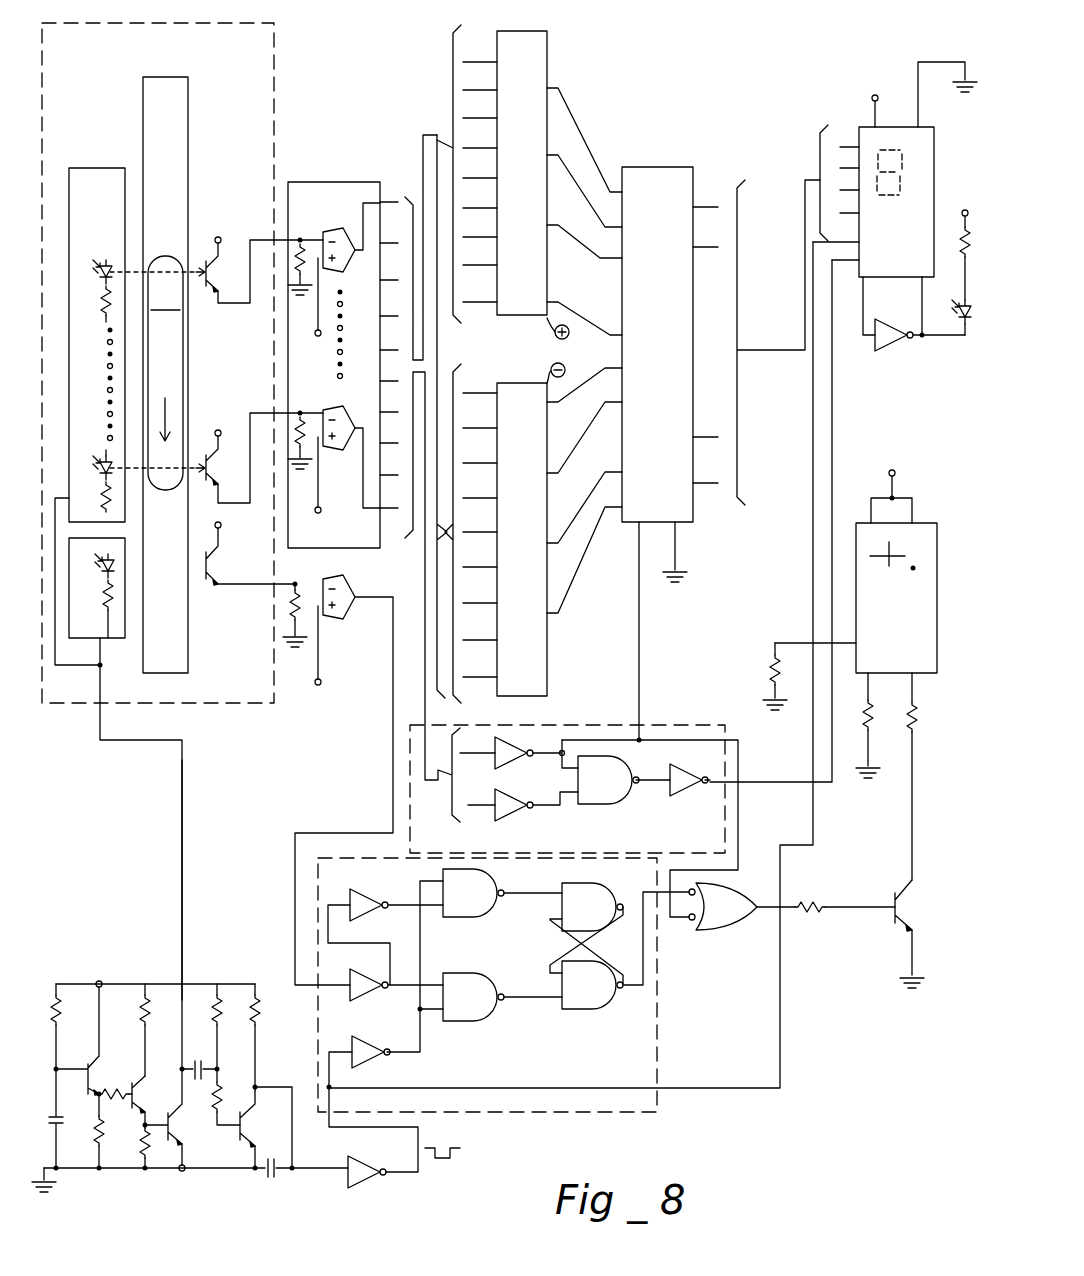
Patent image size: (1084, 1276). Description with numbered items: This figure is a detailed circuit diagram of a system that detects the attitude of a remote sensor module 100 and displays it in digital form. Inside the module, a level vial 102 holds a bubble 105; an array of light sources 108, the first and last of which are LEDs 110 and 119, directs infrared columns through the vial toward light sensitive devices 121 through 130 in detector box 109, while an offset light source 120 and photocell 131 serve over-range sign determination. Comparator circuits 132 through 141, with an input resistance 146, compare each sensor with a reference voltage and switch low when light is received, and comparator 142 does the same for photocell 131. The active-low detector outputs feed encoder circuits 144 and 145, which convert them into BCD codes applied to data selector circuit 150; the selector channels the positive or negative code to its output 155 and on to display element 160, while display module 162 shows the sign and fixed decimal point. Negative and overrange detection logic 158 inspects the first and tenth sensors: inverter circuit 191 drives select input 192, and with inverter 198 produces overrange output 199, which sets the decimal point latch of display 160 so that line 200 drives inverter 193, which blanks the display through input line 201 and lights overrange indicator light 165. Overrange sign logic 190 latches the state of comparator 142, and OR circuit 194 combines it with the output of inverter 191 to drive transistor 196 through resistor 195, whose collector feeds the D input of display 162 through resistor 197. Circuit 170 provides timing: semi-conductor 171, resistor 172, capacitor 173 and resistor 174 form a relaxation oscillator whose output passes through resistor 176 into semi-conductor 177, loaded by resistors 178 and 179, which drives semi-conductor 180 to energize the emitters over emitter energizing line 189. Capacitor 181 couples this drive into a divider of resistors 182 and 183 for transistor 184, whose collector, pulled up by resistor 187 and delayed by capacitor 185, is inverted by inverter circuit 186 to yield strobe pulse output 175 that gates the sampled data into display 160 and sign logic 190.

The remote sensor module 100 is at (274, 68).
The level vial 102 is at (188, 117).
The bubble 105 is at (165, 373).
The light sources 108 is at (110, 159).
The detector box 109 is at (338, 184).
The LED 110 is at (96, 274).
The LED 119 is at (96, 471).
The light source 120 is at (100, 570).
The light sensitive device 121 is at (226, 299).
The light sensitive device 130 is at (222, 490).
The photocell 131 is at (218, 570).
The comparator circuit 132 is at (336, 232).
The comparator circuit 141 is at (352, 438).
The comparator 142 is at (352, 582).
The encoder circuit 144 is at (547, 58).
The encoder circuit 145 is at (521, 375).
The resistance 146 is at (293, 608).
The data selector circuit 150 is at (668, 167).
The output 155 is at (776, 350).
The negative and overrange detection logic 158 is at (677, 724).
The display element 160 is at (858, 126).
The display module 162 is at (927, 523).
The overrange indicator light 165 is at (970, 320).
The clock, emitter drive and strobe generator circuit 170 is at (152, 960).
The semi-conductor 171 is at (128, 1062).
The resistor 172 is at (58, 1000).
The capacitor 173 is at (75, 1130).
The resistor 174 is at (92, 1136).
The strobe pulse output 175 is at (425, 1142).
The resistor 176 is at (125, 1098).
The semi-conductor 177 is at (158, 1135).
The resistor 178 is at (145, 1000).
The resistor 179 is at (147, 1146).
The semi-conductor 180 is at (190, 1134).
The capacitor 181 is at (196, 1058).
The resistor 182 is at (222, 1020).
The resistor 183 is at (222, 1096).
The transistor 184 is at (262, 1128).
The capacitor 185 is at (270, 1180).
The inverter circuit 186 is at (358, 1185).
The resistor 187 is at (258, 1012).
The emitter energizing line 189 is at (184, 818).
The overrange sign logic 190 is at (657, 1060).
The inverter circuit 191 is at (514, 744).
The select input 192 is at (639, 692).
The inverter 193 is at (898, 344).
The OR circuit 194 is at (752, 880).
The resistor 195 is at (846, 876).
The transistor 196 is at (888, 921).
The resistor 197 is at (922, 732).
The inverter 198 is at (500, 820).
The output 199 is at (800, 765).
The line 200 is at (862, 340).
The input line 201 is at (922, 300).